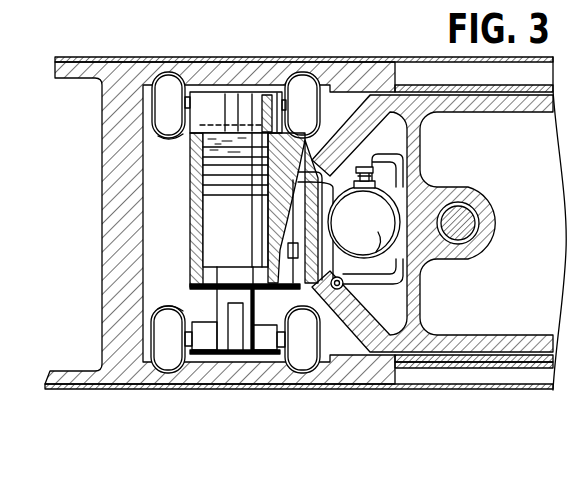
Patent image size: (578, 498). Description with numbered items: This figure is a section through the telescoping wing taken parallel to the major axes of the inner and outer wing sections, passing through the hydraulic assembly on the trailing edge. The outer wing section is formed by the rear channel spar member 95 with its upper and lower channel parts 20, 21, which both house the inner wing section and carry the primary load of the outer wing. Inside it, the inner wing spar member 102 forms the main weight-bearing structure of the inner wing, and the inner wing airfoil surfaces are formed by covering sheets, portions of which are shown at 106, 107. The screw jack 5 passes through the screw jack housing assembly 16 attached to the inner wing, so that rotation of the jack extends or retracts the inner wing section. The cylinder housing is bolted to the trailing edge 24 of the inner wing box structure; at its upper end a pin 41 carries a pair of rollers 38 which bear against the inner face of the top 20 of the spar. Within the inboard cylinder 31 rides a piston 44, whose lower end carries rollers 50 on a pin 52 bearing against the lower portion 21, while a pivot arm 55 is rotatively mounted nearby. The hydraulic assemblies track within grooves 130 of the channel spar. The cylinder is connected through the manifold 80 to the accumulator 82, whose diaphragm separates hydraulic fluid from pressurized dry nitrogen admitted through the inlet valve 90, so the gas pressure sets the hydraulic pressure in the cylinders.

The screw jack 5 is at (477, 222).
The screw jack housing assembly 16 is at (477, 257).
The top of channel-shaped rear spar 20 is at (211, 62).
The lower portion of channel-shaped spar 21 is at (247, 378).
The trailing edge 24 is at (302, 230).
The inboard cylinder 31 is at (196, 231).
The roller 38 is at (176, 140).
The pin 41 is at (191, 103).
The piston 44 is at (233, 247).
The roller 50 is at (182, 304).
The pin 52 is at (222, 340).
The pivot arm 55 is at (236, 322).
The manifold 80 is at (362, 283).
The accumulator 82 is at (365, 229).
The inlet valve 90 is at (360, 172).
The rear channel spar member 95 is at (108, 204).
The inner wing spar member 102 is at (424, 136).
The covering sheet 106 is at (503, 110).
The covering sheet 107 is at (497, 337).
The groove 130 is at (164, 70).